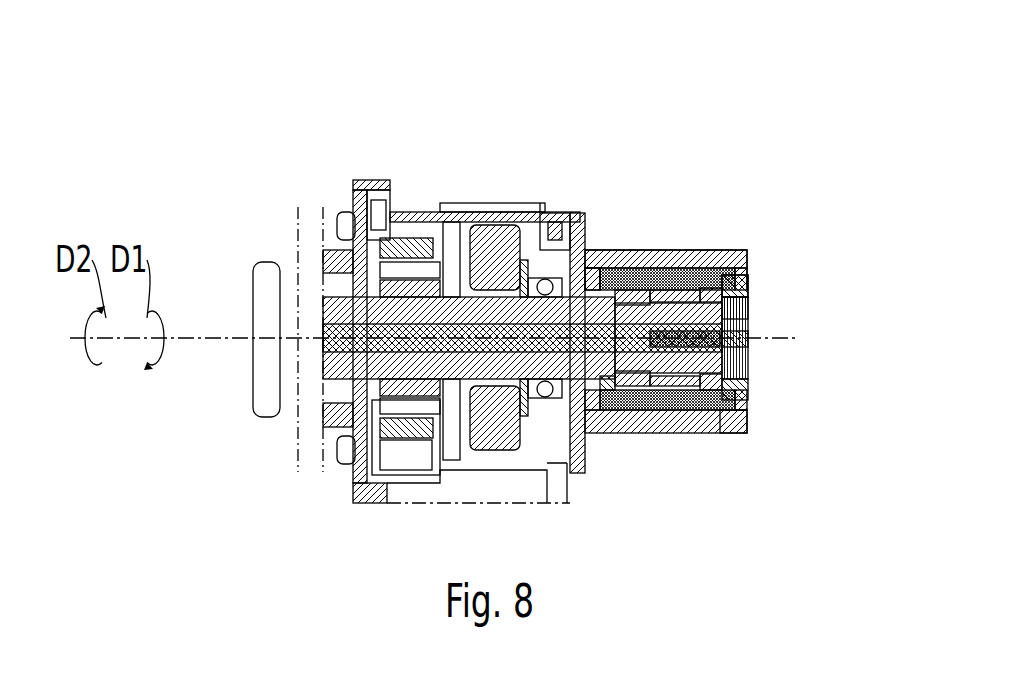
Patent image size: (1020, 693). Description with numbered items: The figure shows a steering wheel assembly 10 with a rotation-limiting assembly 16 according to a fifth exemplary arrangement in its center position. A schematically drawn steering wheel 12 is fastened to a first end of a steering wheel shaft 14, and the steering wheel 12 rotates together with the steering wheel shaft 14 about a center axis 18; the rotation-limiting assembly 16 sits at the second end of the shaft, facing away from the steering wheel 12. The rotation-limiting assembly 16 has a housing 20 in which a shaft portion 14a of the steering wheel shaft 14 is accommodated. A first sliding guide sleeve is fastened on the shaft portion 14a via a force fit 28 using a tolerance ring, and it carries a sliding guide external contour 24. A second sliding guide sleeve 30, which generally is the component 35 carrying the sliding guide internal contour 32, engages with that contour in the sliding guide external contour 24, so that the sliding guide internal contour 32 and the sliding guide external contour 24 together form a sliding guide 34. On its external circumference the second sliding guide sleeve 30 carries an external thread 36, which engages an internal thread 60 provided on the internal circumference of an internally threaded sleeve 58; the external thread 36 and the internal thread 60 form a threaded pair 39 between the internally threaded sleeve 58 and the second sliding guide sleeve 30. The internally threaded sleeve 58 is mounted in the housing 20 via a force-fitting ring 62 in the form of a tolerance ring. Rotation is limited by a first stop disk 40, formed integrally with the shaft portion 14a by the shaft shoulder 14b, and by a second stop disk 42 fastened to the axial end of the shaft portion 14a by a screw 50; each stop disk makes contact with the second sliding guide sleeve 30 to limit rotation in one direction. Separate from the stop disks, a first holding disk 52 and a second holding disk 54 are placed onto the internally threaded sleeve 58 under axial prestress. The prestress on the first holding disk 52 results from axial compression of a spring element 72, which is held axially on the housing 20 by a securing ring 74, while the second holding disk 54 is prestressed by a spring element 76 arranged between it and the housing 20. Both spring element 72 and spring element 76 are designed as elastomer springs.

The steering wheel assembly 10 is at (765, 130).
The steering wheel 12 is at (264, 268).
The steering wheel shaft 14 is at (287, 305).
The shaft portion 14a is at (750, 355).
The shaft shoulder 14b is at (535, 212).
The rotation-limiting assembly 16 is at (805, 150).
The center axis 18 is at (213, 337).
The housing 20 is at (735, 422).
The sliding guide external contour 24 is at (750, 308).
The force fit 28 is at (652, 425).
The second sliding guide sleeve 30 is at (748, 284).
The sliding guide internal contour 32 is at (742, 388).
The sliding guide 34 is at (655, 420).
The component carrying the sliding guide internal contour 35 is at (735, 286).
The external thread 36 is at (674, 270).
The threaded pair 39 is at (688, 290).
The first stop disk 40 is at (613, 405).
The second stop disk 42 is at (748, 378).
The screw 50 is at (750, 347).
The first holding disk 52 is at (605, 410).
The second holding disk 54 is at (720, 432).
The internally threaded sleeve 58 is at (709, 288).
The internal thread 60 is at (630, 293).
The force-fitting ring 62 is at (631, 408).
The spring element 72 is at (595, 280).
The securing ring 74 is at (576, 213).
The spring element 76 is at (745, 260).